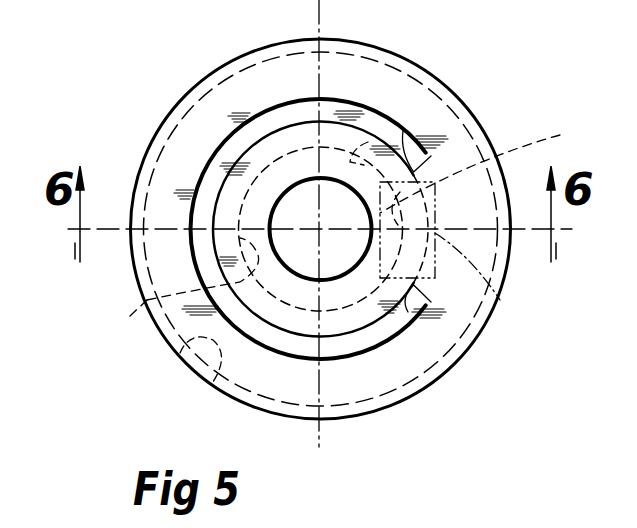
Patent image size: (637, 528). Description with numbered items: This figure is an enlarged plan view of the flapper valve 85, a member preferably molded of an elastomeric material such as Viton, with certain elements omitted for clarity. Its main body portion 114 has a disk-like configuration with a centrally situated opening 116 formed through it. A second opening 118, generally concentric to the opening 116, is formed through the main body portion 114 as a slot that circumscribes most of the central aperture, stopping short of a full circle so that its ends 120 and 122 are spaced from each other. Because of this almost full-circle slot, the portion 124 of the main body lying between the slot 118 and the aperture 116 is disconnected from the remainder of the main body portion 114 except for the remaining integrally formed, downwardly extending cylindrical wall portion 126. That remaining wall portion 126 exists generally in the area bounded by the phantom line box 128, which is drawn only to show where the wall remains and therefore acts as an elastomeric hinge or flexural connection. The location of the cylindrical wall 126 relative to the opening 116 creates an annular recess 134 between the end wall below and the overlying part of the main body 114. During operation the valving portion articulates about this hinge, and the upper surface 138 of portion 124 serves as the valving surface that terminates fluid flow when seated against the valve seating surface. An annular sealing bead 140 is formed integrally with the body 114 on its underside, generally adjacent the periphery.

The flapper valve 85 is at (436, 81).
The main body portion 114 is at (425, 347).
The centrally situated opening 116 is at (285, 188).
The second opening 118 is at (214, 165).
The end of slot 120 is at (404, 131).
The end of slot 122 is at (417, 300).
The valving portion 124 is at (298, 164).
The cylindrical wall portion 126 is at (339, 232).
The phantom line box 128 is at (437, 276).
The annular recess 134 is at (369, 140).
The upper surface 138 is at (293, 287).
The annular sealing bead 140 is at (204, 386).